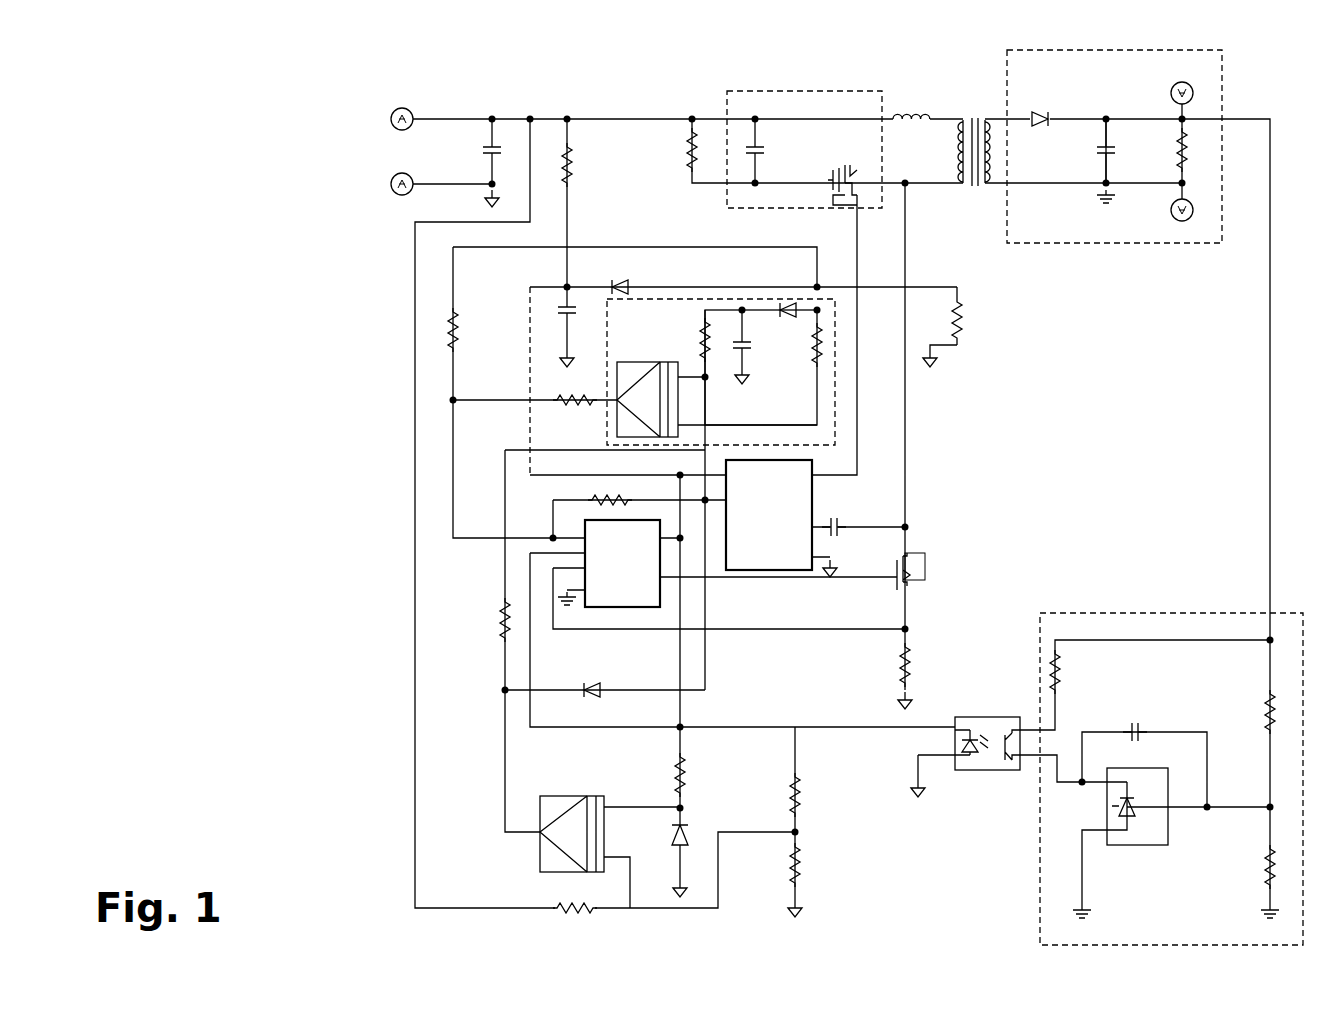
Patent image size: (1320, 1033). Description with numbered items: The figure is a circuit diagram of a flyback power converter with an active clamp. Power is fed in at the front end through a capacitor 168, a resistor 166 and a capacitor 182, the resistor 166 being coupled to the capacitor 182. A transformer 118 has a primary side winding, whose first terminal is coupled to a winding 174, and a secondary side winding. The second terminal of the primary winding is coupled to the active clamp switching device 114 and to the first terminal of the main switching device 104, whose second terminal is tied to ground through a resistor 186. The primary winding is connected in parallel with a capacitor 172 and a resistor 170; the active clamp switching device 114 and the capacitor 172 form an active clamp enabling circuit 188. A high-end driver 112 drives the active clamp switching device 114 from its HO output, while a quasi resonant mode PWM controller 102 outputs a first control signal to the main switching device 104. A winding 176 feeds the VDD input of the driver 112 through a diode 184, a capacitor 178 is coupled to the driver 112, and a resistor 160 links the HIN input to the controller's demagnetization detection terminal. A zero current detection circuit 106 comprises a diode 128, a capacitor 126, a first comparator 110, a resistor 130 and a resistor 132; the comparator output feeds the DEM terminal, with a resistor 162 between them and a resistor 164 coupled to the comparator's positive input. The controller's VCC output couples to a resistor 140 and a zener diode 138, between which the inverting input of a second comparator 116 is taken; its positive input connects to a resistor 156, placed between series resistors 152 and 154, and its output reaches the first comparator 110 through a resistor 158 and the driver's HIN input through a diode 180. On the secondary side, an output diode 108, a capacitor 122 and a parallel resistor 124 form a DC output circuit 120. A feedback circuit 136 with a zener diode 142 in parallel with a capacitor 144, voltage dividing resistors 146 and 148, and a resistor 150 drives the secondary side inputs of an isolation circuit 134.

The quasi resonant mode PWM controller 102 is at (622, 563).
The primary side main switching device 104 is at (934, 571).
The primary side zero current detection circuit 106 is at (715, 287).
The output diode 108 is at (1035, 104).
The first comparator 110 is at (660, 337).
The high-end driver 112 is at (769, 515).
The primary side active clamp switching device 114 is at (844, 171).
The second comparator 116 is at (540, 832).
The transformer 118 is at (973, 190).
The DC output circuit 120 is at (1103, 243).
The capacitor 122 is at (1082, 151).
The resistor 124 is at (1159, 150).
The capacitor 126 is at (760, 338).
The diode 128 is at (790, 299).
The resistor 130 is at (682, 340).
The resistor 132 is at (795, 349).
The isolation circuit 134 is at (985, 770).
The feedback circuit 136 is at (1165, 613).
The zener diode 138 is at (657, 844).
The resistor 140 is at (656, 775).
The zener diode 142 is at (1152, 845).
The capacitor 144 is at (1131, 717).
The voltage dividing resistor 146 is at (1247, 712).
The voltage dividing resistor 148 is at (1247, 867).
The resistor 150 is at (1076, 672).
The resistor 152 is at (815, 795).
The resistor 154 is at (817, 865).
The resistor 156 is at (574, 925).
The resistor 158 is at (482, 620).
The resistor 160 is at (593, 490).
The resistor 162 is at (572, 414).
The resistor 164 is at (475, 330).
The resistor 166 is at (588, 166).
The capacitor 168 is at (469, 151).
The resistor 170 is at (667, 150).
The capacitor 172 is at (775, 151).
The winding 174 is at (910, 100).
The winding 176 is at (979, 316).
The capacitor 178 is at (835, 511).
The diode 180 is at (591, 677).
The capacitor 182 is at (582, 318).
The diode 184 is at (618, 273).
The resistor 186 is at (927, 665).
The active clamp enabling circuit 188 is at (780, 91).